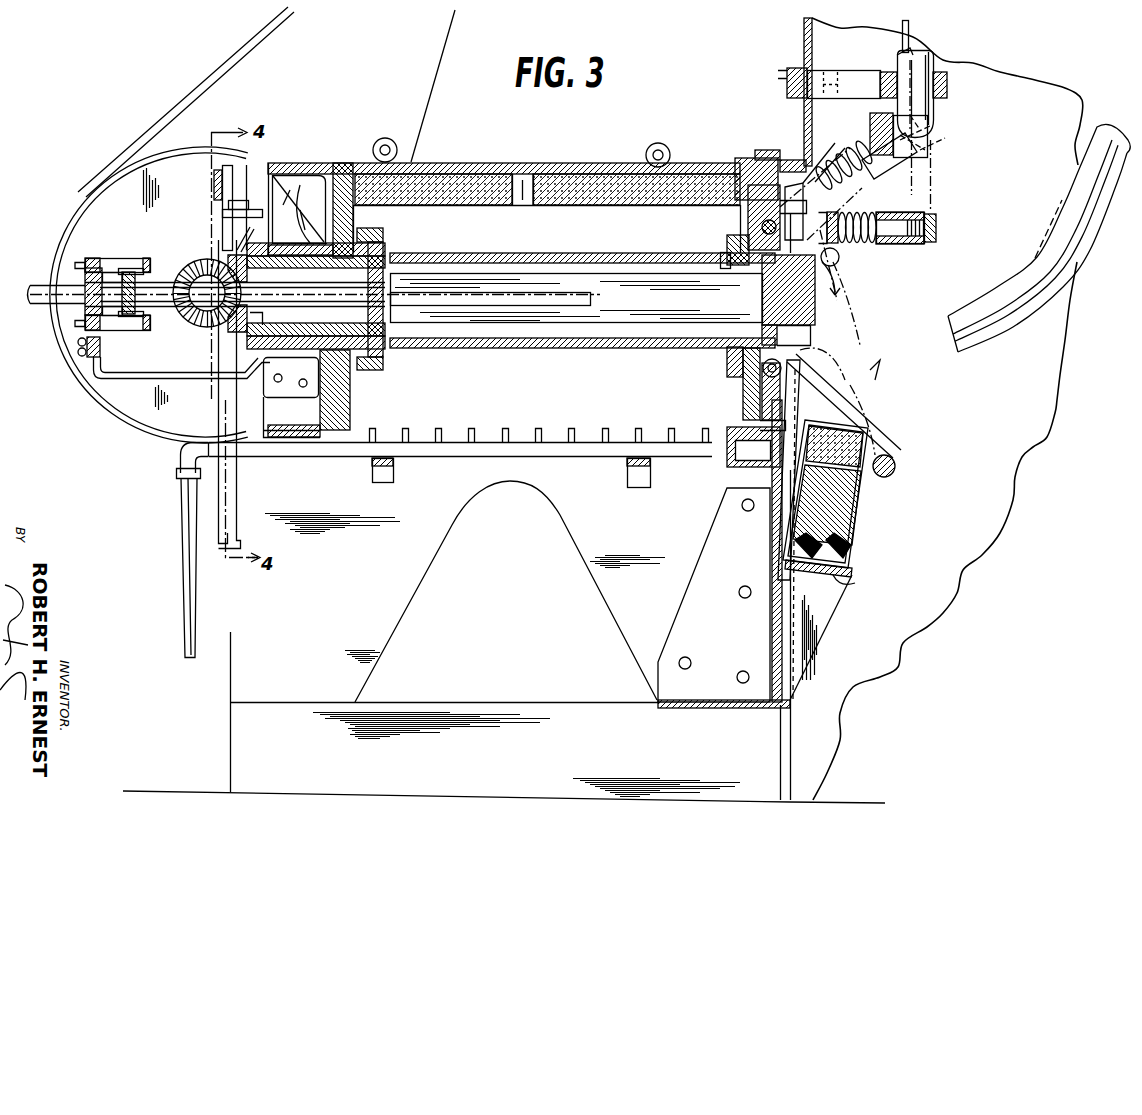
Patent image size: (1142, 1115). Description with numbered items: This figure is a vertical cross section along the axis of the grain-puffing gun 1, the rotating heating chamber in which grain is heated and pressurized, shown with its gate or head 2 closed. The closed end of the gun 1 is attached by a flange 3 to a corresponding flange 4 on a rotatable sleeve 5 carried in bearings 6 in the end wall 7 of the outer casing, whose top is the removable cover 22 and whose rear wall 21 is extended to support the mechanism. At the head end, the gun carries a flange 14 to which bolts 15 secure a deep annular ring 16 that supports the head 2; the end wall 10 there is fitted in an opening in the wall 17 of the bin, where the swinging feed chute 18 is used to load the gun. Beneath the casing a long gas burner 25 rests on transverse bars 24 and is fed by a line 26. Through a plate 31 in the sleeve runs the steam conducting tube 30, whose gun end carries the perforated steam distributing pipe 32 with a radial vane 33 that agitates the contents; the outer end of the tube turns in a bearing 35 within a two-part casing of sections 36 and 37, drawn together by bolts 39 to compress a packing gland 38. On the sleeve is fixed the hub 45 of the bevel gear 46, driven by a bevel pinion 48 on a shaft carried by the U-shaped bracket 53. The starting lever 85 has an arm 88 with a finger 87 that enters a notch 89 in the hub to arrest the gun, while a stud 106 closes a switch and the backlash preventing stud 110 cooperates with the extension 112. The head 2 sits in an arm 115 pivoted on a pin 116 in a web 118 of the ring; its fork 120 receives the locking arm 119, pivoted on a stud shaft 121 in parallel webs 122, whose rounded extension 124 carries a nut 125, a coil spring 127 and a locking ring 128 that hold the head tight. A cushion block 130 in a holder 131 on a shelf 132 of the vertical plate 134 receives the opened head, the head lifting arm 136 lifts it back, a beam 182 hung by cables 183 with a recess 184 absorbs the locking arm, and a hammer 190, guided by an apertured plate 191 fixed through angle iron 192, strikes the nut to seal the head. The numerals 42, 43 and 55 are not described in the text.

The rotating gun 1 is at (584, 261).
The gate or head 2 is at (806, 303).
The flange 3 is at (385, 249).
The flange 4 is at (382, 232).
The rotatable sleeve 5 is at (330, 270).
The bearings 6 is at (310, 210).
The end wall 7 is at (326, 164).
The end wall 10 is at (752, 162).
The flange 14 is at (735, 244).
The bolts 15 is at (735, 362).
The annular ring 16 is at (762, 375).
The wall of the bin 17 is at (804, 38).
The swinging feed chute 18 is at (1022, 268).
The rear wall 21 is at (575, 495).
The removable cover 22 is at (590, 175).
The transverse bars 24 is at (372, 466).
The gas burner 25 is at (480, 456).
The line 26 is at (183, 511).
The steam conducting tube 30 is at (312, 307).
The plate 31 is at (258, 270).
The steam distributing pipe 32 is at (592, 300).
The radial vane 33 is at (636, 273).
The bearing 35 is at (150, 278).
The casing section 36 is at (146, 258).
The casing section 37 is at (95, 258).
The packing gland 38 is at (85, 318).
The bolts 39 is at (122, 268).
The shaft end 42 is at (48, 286).
The pipe 43 is at (124, 378).
The hub 45 is at (270, 370).
The bevel gear 46 is at (228, 262).
The bevel pinion 48 is at (185, 320).
The U-shaped bracket 53 is at (180, 447).
The circular guard 55 is at (103, 386).
The starting lever 85 is at (220, 166).
The finger 87 is at (292, 191).
The arm 88 is at (262, 165).
The notch 89 is at (301, 212).
The stud 106 is at (256, 318).
The backlash preventing stud 110 is at (232, 225).
The extension 112 is at (227, 205).
The arm 115 is at (847, 262).
The pin 116 is at (745, 366).
The web 118 is at (762, 397).
The locking arm 119 is at (805, 200).
The fork 120 is at (839, 256).
The stud shaft 121 is at (728, 256).
The parallel webs 122 is at (748, 222).
The rounded extension 124 is at (918, 212).
The nut 125 is at (936, 240).
The coil spring 127 is at (891, 206).
The locking ring 128 is at (885, 218).
The cushion block 130 is at (890, 443).
The holder 131 is at (860, 493).
The shelf 132 is at (858, 580).
The vertical plate 134 is at (772, 532).
The head lifting arm 136 is at (895, 463).
The beam 182 is at (870, 122).
The cables 183 is at (908, 30).
The recess 184 is at (928, 136).
The hammer 190 is at (928, 53).
The apertured plate 191 is at (948, 84).
The angle iron 192 is at (787, 73).